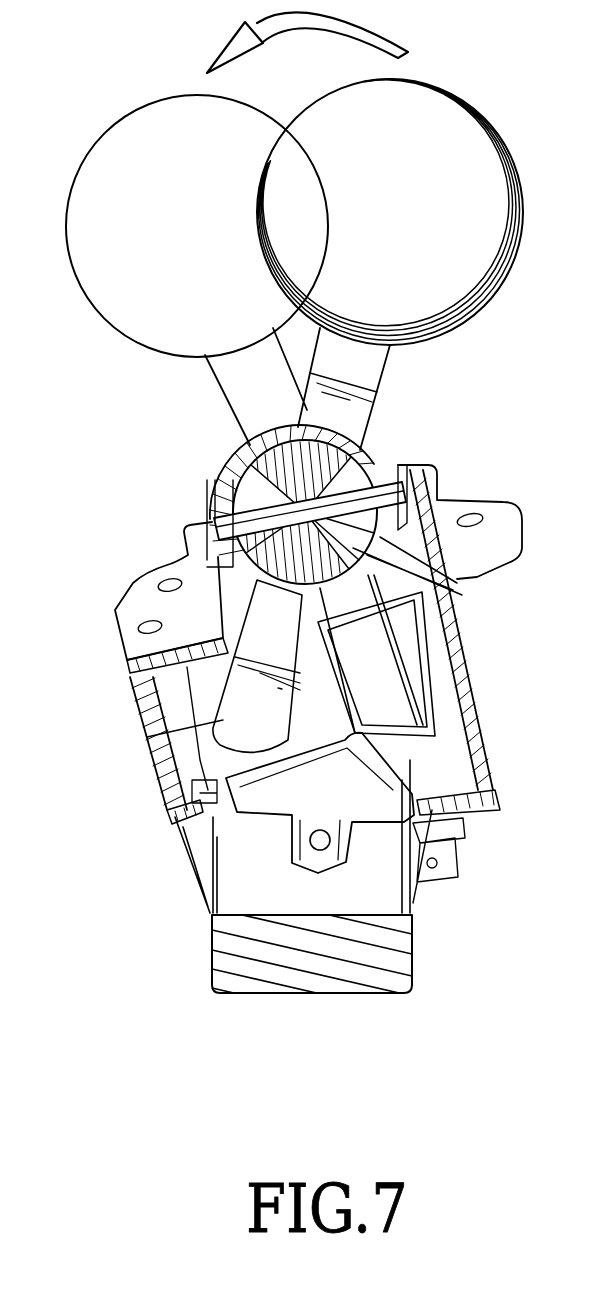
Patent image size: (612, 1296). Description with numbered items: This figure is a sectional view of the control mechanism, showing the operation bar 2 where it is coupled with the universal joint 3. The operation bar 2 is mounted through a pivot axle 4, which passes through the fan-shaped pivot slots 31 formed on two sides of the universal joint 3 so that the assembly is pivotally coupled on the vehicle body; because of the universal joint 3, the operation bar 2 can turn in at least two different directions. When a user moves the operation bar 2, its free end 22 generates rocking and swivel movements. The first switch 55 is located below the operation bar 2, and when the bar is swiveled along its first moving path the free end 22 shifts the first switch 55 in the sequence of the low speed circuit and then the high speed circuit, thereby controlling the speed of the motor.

The operation bar 2 is at (405, 411).
The universal joint 3 is at (397, 468).
The fan-shaped pivot slot 31 is at (352, 548).
The pivot axle 4 is at (214, 520).
The free end 22 is at (150, 742).
The first switch 55 is at (352, 777).